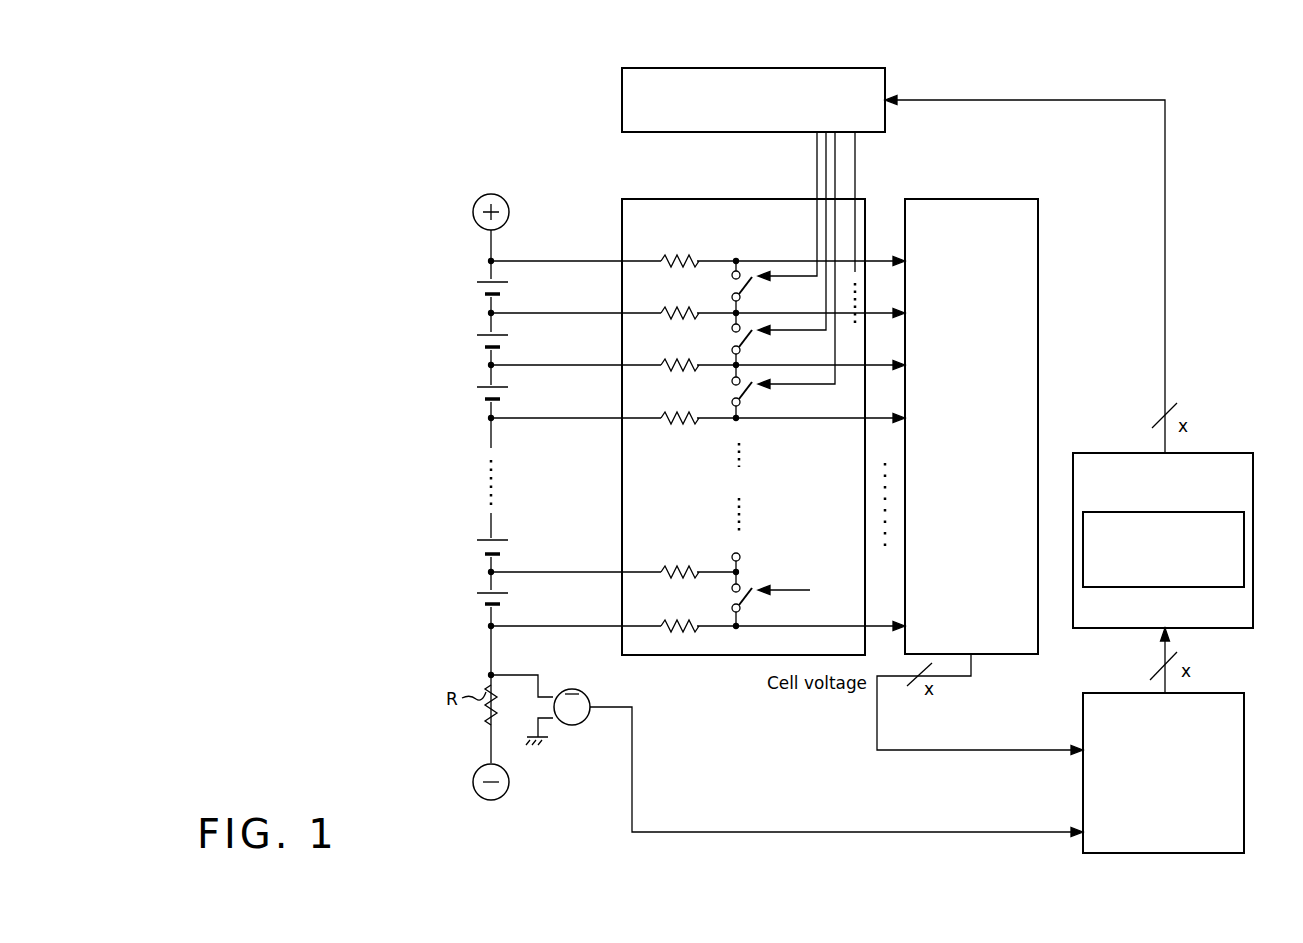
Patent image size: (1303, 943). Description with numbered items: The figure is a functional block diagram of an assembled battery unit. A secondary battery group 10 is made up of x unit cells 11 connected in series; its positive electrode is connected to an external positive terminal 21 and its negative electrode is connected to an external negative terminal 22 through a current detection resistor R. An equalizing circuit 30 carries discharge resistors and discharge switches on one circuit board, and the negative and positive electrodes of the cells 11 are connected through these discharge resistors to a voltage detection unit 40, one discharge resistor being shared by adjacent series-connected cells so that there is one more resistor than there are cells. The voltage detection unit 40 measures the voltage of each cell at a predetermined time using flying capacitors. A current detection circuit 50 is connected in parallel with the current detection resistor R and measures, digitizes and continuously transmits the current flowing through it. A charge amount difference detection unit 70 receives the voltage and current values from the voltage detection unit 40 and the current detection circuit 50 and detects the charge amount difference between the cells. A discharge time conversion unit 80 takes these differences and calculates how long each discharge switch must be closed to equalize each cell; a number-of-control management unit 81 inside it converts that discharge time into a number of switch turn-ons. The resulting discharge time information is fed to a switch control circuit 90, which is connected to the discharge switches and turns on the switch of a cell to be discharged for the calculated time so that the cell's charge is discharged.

The secondary battery group 10 is at (348, 660).
The unit cell 11 is at (482, 281).
The external positive terminal 21 is at (490, 193).
The external negative terminal 22 is at (491, 800).
The equalizing circuit 30 is at (655, 198).
The voltage detection unit 40 is at (991, 198).
The current detection circuit 50 is at (572, 688).
The charge amount difference detection unit 70 is at (1219, 693).
The discharge time conversion unit 80 is at (1219, 453).
The number-of-control management unit 81 is at (1205, 588).
The switch control circuit 90 is at (744, 134).